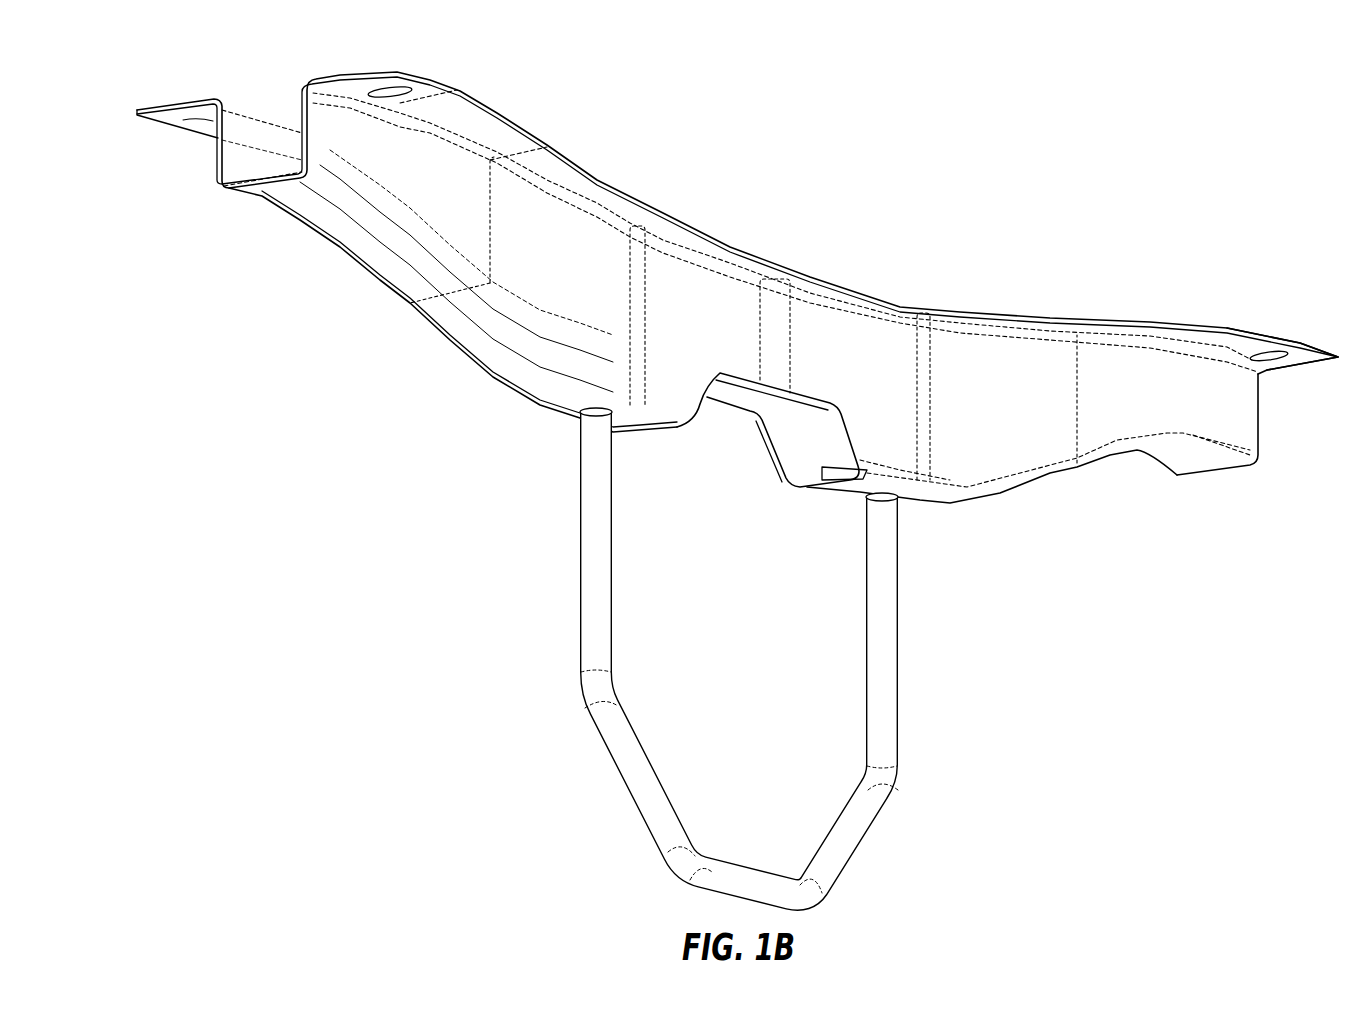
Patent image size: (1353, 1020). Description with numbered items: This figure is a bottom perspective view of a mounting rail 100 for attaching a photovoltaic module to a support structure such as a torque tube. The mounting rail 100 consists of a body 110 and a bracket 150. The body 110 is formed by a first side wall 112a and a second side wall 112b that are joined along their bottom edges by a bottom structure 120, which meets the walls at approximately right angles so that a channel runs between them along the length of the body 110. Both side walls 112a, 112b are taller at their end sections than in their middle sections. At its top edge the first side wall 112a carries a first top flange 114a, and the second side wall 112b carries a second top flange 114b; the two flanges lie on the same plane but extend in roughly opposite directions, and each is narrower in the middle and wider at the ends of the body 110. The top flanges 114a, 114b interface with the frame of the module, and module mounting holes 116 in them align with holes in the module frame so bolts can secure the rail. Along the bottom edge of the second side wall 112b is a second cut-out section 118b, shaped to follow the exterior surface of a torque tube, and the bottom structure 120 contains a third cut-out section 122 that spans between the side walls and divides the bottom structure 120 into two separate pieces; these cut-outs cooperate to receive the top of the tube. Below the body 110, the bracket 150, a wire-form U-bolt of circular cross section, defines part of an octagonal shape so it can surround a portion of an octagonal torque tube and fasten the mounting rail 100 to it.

The mounting rail 100 is at (1255, 87).
The body 110 is at (340, 247).
The first side wall 112a is at (243, 137).
The second side wall 112b is at (1227, 413).
The first top flange 114a is at (170, 97).
The second top flange 114b is at (1288, 333).
The module mounting holes 116 is at (383, 93).
The second cut-out section 118b is at (727, 380).
The bottom structure 120 is at (467, 343).
The third cut-out section 122 is at (827, 487).
The bracket 150 is at (578, 545).